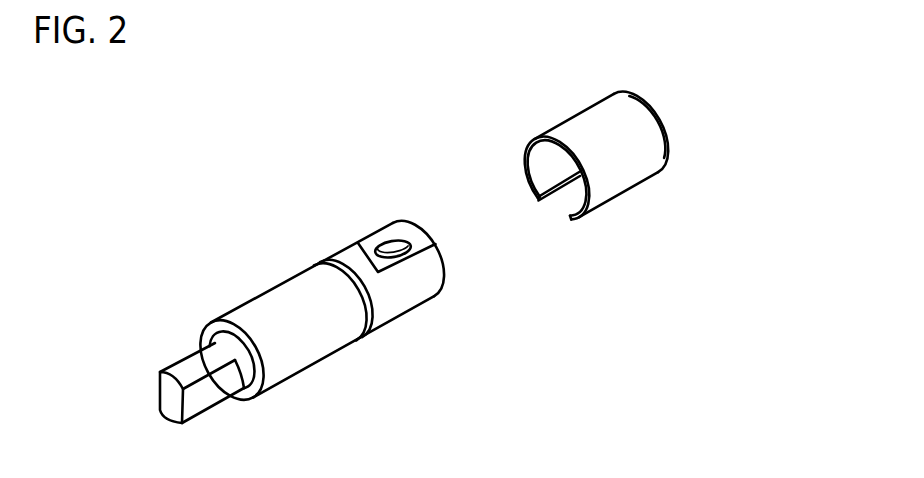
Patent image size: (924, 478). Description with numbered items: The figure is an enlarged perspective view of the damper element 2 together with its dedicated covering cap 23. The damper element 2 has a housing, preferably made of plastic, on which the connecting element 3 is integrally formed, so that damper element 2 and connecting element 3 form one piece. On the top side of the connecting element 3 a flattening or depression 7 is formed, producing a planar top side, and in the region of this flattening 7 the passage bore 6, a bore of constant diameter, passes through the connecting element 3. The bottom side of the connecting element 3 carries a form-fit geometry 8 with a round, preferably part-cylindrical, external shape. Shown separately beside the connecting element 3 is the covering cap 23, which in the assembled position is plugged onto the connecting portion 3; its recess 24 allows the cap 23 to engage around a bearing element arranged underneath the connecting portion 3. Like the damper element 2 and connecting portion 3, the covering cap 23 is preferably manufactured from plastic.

The damper element 2 is at (245, 290).
The connecting element 3 is at (333, 245).
The passage bore 6 is at (393, 247).
The flattening or depression 7 is at (427, 242).
The form-fit geometry 8 is at (420, 315).
The covering cap 23 is at (573, 108).
The recess 24 is at (557, 203).